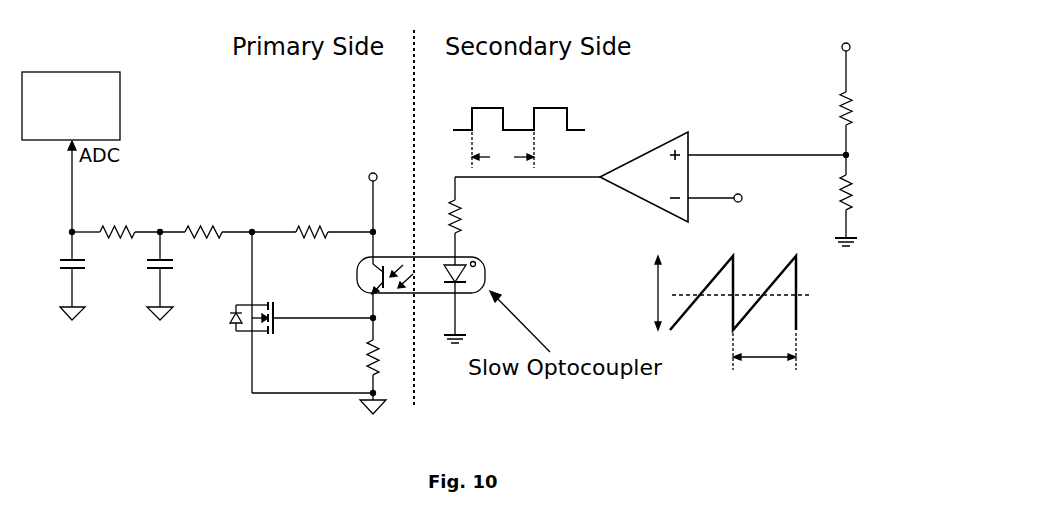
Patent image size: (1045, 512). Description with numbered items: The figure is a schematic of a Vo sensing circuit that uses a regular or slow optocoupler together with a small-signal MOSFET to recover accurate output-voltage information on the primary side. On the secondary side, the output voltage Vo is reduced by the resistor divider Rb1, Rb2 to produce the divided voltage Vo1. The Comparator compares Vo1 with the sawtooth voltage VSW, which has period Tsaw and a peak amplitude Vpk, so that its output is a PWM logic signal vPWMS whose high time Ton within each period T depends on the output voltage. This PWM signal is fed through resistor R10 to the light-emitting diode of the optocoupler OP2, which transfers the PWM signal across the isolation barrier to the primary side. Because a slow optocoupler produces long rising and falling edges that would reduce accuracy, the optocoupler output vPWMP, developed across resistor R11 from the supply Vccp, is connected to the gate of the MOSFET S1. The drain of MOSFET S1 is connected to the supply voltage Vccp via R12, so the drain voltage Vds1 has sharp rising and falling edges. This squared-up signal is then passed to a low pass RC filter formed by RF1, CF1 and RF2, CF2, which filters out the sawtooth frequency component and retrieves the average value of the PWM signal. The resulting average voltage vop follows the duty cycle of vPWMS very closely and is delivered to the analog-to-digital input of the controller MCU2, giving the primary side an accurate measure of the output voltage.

The microcontroller unit MCU2 is at (71, 106).
The average voltage Vop vop is at (55, 186).
The filter resistor RF2 is at (115, 218).
The filter resistor RF1 is at (202, 218).
The drain resistor R12 is at (310, 218).
The drain voltage of MOSFET S1 Vds1 is at (274, 252).
The supply voltage Vccp is at (370, 189).
The filter capacitor CF2 is at (87, 276).
The filter capacitor CF1 is at (175, 276).
The MOSFET S1 is at (240, 312).
The optocoupler output vPWMP is at (324, 308).
The resistor R11 is at (352, 346).
The optocoupler OP2 is at (447, 287).
The on time Ton is at (519, 105).
The period T is at (503, 150).
The resistor R10 is at (473, 205).
The secondary side PWM signal vPWMS is at (527, 191).
The comparator Comparator is at (656, 165).
The sawtooth voltage VSW is at (740, 200).
The output voltage Vo is at (847, 52).
The divider resistor Rb1 is at (868, 133).
The divider resistor Rb2 is at (865, 210).
The sawtooth peak voltage Vpk is at (708, 293).
The divided output voltage Vo1 is at (759, 299).
The sawtooth period Tsaw is at (764, 363).